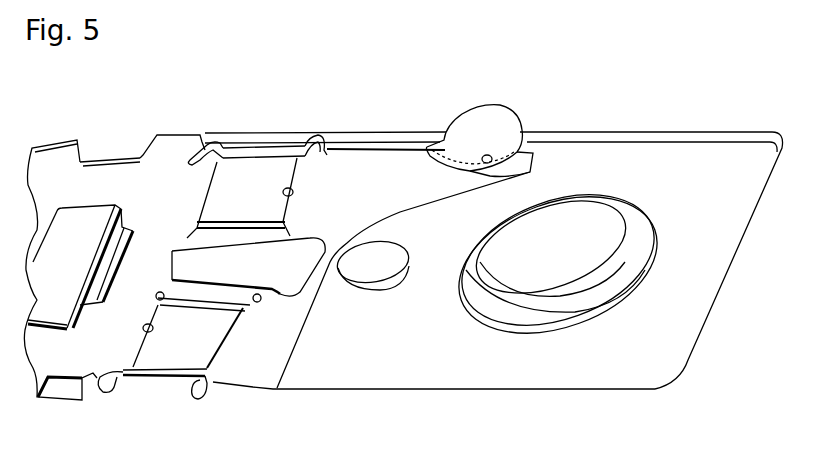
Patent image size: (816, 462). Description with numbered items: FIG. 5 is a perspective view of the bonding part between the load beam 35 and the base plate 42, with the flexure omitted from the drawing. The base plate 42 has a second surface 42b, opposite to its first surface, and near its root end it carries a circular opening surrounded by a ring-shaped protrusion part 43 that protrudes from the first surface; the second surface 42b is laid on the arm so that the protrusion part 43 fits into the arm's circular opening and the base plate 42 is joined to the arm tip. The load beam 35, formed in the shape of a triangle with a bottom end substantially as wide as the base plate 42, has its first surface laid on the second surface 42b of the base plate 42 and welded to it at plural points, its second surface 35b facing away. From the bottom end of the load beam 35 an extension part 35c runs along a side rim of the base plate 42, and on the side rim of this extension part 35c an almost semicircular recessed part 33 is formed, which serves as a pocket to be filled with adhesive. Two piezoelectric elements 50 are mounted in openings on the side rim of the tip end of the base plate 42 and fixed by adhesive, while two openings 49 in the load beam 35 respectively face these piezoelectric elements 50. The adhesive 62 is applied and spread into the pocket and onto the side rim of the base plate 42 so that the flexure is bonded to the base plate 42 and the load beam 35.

The recessed part 33 is at (488, 163).
The load beam 35 is at (122, 168).
The second surface 35b is at (168, 166).
The extension part 35c is at (425, 191).
The base plate 42 is at (677, 144).
The second surface 42b is at (513, 378).
The protrusion part 43 is at (568, 303).
The openings 49 is at (293, 193).
The piezoelectric elements 50 is at (265, 172).
The adhesive 62 is at (470, 127).